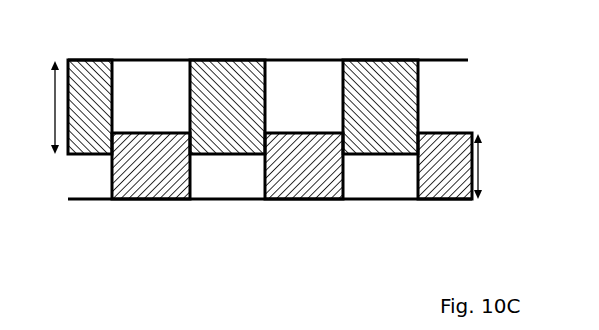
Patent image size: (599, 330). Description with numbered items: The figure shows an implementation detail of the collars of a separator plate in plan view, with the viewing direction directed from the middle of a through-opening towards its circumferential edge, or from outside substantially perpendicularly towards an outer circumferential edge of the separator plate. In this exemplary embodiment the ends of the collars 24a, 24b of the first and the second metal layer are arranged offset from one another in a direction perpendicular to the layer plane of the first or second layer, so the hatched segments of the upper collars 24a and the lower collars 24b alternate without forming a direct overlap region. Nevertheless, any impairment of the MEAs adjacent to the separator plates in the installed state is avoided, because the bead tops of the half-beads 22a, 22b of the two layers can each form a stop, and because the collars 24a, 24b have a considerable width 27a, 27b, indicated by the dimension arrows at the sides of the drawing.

The half-bead 22a is at (153, 58).
The half-bead 22b is at (373, 202).
The collar 24a is at (243, 107).
The collar 24b is at (292, 166).
The width 27a is at (38, 107).
The width 27b is at (496, 166).